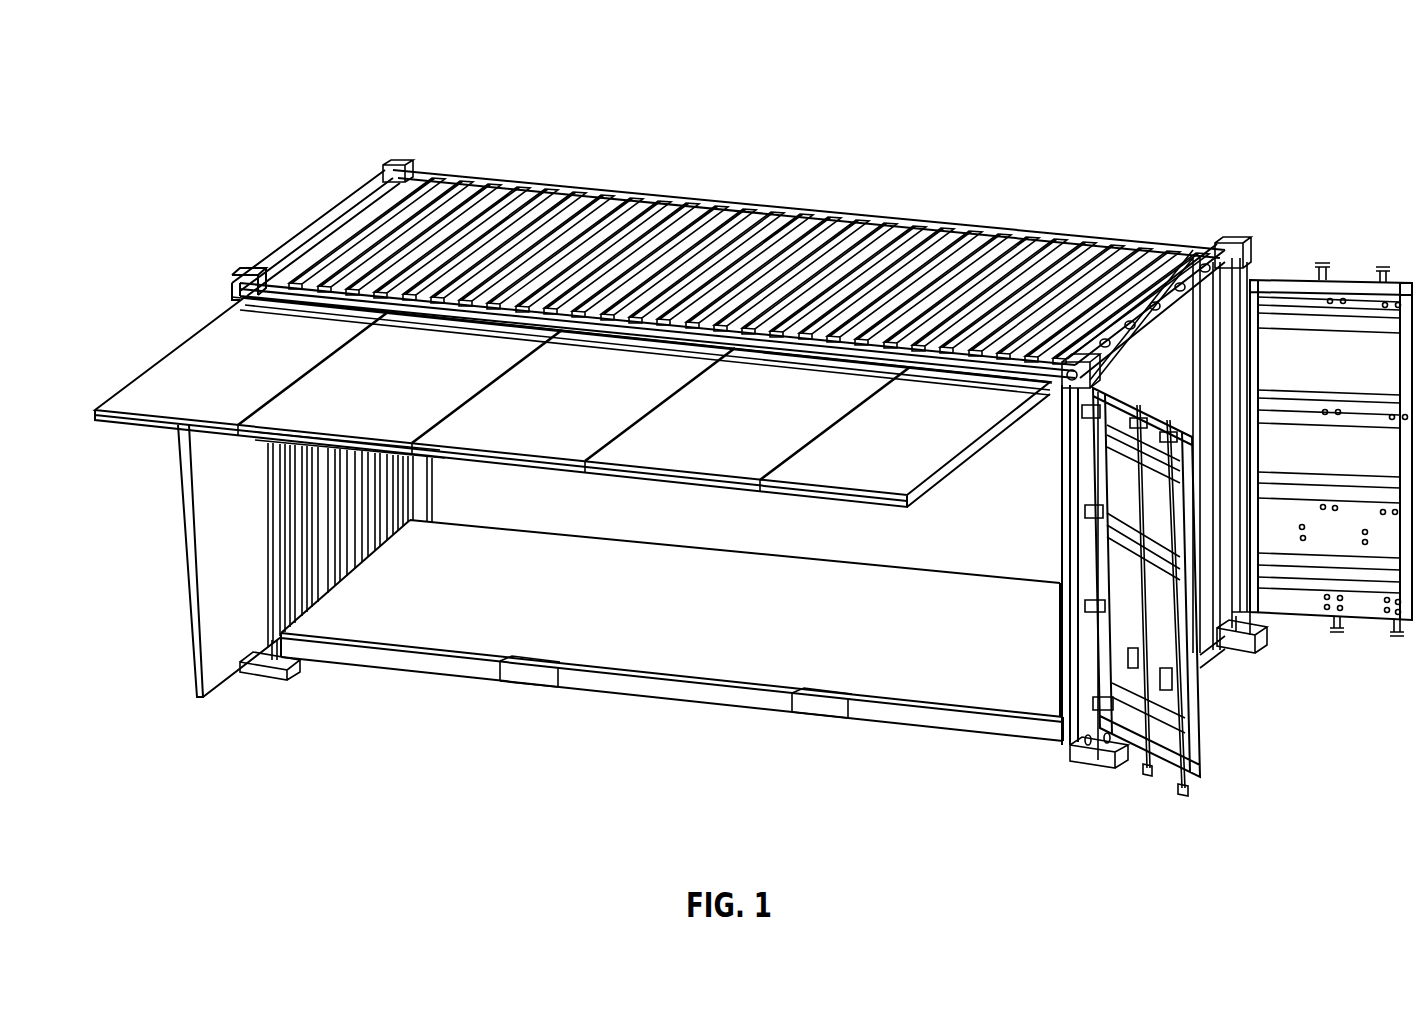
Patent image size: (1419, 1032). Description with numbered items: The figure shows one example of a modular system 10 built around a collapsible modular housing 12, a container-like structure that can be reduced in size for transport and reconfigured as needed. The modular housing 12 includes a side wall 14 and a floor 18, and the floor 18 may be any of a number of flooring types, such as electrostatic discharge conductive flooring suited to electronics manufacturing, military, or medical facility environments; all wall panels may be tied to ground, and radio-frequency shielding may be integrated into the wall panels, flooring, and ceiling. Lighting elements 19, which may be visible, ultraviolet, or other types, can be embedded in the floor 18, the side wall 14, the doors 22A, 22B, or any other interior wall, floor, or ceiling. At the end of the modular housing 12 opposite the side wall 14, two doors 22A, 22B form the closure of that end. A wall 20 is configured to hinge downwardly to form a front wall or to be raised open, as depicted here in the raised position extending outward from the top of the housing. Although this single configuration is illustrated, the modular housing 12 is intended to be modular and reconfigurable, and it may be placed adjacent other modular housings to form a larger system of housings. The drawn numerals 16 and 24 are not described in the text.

The modular system 10 is at (895, 67).
The modular housing 12 is at (1003, 340).
The side wall 14 is at (290, 236).
The base frame 16 is at (567, 690).
The floor 18 is at (500, 600).
The lighting elements 19 is at (672, 660).
The wall 20 is at (178, 397).
The door 22A is at (1180, 742).
The door 22B is at (1367, 353).
The roof slats 24 is at (570, 220).